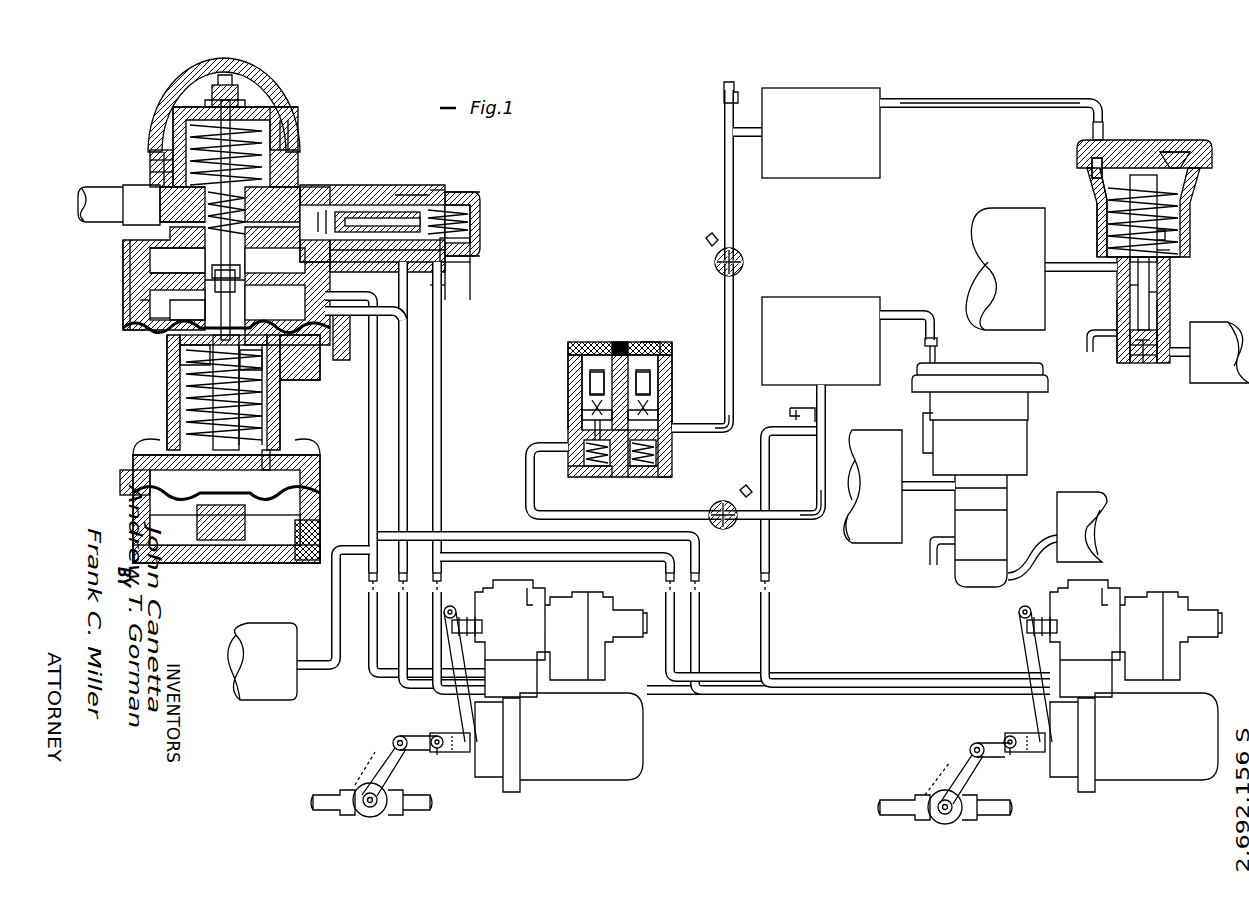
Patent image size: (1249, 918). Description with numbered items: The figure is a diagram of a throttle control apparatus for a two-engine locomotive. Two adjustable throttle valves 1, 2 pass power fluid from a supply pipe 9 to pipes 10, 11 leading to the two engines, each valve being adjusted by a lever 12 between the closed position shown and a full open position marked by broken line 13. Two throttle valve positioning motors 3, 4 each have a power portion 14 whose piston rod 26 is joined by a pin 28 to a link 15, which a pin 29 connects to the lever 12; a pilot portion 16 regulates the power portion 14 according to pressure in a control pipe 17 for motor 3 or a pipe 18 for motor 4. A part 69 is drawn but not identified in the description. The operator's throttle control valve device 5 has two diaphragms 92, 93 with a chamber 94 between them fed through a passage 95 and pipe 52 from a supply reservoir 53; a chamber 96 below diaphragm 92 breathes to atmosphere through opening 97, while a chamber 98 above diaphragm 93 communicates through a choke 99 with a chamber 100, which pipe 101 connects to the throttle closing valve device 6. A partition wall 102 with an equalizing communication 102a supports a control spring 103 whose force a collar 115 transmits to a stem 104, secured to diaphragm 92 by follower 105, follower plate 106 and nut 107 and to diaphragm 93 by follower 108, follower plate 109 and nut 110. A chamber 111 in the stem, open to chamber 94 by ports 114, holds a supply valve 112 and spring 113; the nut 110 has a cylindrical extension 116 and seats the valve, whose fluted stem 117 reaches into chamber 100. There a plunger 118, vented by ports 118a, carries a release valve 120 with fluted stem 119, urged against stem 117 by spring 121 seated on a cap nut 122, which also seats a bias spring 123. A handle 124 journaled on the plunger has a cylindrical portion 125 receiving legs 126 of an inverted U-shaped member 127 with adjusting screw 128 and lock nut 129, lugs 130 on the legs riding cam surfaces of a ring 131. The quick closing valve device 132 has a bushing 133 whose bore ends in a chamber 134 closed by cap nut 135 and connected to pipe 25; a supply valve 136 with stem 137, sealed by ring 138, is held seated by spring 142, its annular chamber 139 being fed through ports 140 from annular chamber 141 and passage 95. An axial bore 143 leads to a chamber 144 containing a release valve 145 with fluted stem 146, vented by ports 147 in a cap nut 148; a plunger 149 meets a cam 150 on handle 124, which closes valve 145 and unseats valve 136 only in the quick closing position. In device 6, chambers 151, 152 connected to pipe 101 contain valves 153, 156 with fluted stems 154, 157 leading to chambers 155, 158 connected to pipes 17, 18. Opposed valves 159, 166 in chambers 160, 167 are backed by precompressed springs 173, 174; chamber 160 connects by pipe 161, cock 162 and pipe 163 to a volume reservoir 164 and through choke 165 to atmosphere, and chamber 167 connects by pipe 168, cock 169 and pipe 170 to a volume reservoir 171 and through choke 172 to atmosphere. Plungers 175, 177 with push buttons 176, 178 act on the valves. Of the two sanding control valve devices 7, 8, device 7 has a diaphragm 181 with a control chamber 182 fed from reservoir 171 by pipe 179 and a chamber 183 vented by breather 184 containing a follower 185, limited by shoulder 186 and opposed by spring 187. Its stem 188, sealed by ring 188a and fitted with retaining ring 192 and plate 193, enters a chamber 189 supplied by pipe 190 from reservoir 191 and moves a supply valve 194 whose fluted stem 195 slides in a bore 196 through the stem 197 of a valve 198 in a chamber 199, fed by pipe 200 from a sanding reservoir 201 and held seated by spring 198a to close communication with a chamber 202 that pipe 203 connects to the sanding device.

The adjustable throttle valve 1 is at (350, 777).
The adjustable throttle valve 2 is at (922, 788).
The throttle valve positioning motor 3 is at (112, 186).
The throttle valve positioning motor 4 is at (1048, 649).
The operator's throttle control valve device 5 is at (177, 75).
The throttle closing valve device 6 is at (571, 333).
The sanding control valve device 7 is at (1076, 135).
The sanding control valve device 8 is at (905, 403).
The supply pipe 9 is at (315, 798).
The pipe 10 is at (420, 811).
The pipe 11 is at (1000, 815).
The lever 12 is at (386, 772).
The broken line 13 is at (345, 758).
The power portion 14 is at (656, 733).
The link 15 is at (433, 738).
The pilot portion 16 is at (614, 614).
The control pipe 17 is at (441, 440).
The pipe 18 is at (765, 428).
The pipe 25 is at (442, 349).
The piston rod 26 is at (453, 752).
The pin 28 is at (437, 755).
The pin 29 is at (396, 737).
The pipe 52 is at (368, 479).
The supply reservoir 53 is at (236, 630).
The lever 69 is at (462, 712).
The flexible diaphragm 92 is at (150, 493).
The flexible diaphragm 93 is at (125, 330).
The chamber 94 is at (170, 413).
The passage 95 is at (318, 358).
The chamber 96 is at (212, 548).
The breather opening 97 is at (316, 535).
The chamber 98 is at (205, 296).
The choke 99 is at (292, 286).
The chamber 100 is at (122, 262).
The pipe 101 is at (408, 388).
The partition wall 102 is at (190, 462).
The constantly open communication 102a is at (272, 460).
The control spring 103 is at (186, 396).
The stem 104 is at (214, 420).
The follower 105 is at (150, 482).
The follower plate 106 is at (140, 522).
The nut 107 is at (236, 532).
The follower 108 is at (130, 340).
The follower plate 109 is at (160, 332).
The nut 110 is at (175, 318).
The chamber 111 is at (264, 405).
The supply valve 112 is at (252, 365).
The spring 113 is at (258, 385).
The ports 114 is at (185, 372).
The collar 115 is at (178, 355).
The cylindrical extension 116 is at (140, 305).
The fluted stem 117 is at (125, 288).
The plunger 118 is at (165, 196).
The ports 118a is at (150, 165).
The fluted stem 119 is at (152, 250).
The release valve 120 is at (165, 275).
The spring 121 is at (165, 218).
The cap nut 122 is at (178, 112).
The bias spring 123 is at (172, 125).
The handle 124 is at (95, 189).
The cylindrical portion 125 is at (158, 175).
The legs 126 is at (290, 140).
The inverted U-shaped member 127 is at (292, 118).
The adjusting screw 128 is at (236, 96).
The lock nut 129 is at (246, 103).
The lug 130 is at (190, 160).
The ring 131 is at (165, 148).
The quick closing valve device 132 is at (462, 188).
The bushing 133 is at (455, 290).
The chamber 134 is at (462, 262).
The cap nut 135 is at (468, 248).
The supply valve 136 is at (472, 200).
The stem 137 is at (440, 196).
The sealing ring 138 is at (405, 192).
The annular chamber 139 is at (464, 197).
The ports 140 is at (455, 192).
The annular chamber 141 is at (442, 312).
The spring 142 is at (476, 215).
The axial bore 143 is at (470, 232).
The chamber 144 is at (375, 192).
The release valve 145 is at (385, 214).
The fluted stem 146 is at (412, 216).
The ports 147 is at (322, 246).
The cap nut 148 is at (345, 305).
The plunger 149 is at (241, 220).
The cam 150 is at (345, 200).
The chamber 151 is at (576, 368).
The chamber 152 is at (672, 350).
The valve 153 is at (588, 396).
The fluted stem 154 is at (580, 414).
The chamber 155 is at (582, 438).
The valve 156 is at (663, 372).
The fluted stem 157 is at (652, 396).
The chamber 158 is at (660, 412).
The valve 159 is at (582, 457).
The chamber 160 is at (610, 478).
The pipe 161 is at (527, 498).
The cock 162 is at (723, 527).
The pipe 163 is at (805, 520).
The volume reservoir 164 is at (852, 297).
The choke 165 is at (808, 422).
The valve 166 is at (660, 457).
The chamber 167 is at (666, 478).
The pipe 168 is at (727, 440).
The cock 169 is at (744, 264).
The pipe 170 is at (735, 227).
The volume reservoir 171 is at (845, 178).
The choke 172 is at (722, 96).
The precompressed spring 173 is at (572, 478).
The precompressed spring 174 is at (648, 478).
The plunger 175 is at (568, 350).
The operator's push button 176 is at (592, 344).
The plunger 177 is at (621, 344).
The operator's push button 178 is at (648, 344).
The pipe 179 is at (1005, 100).
The diaphragm 181 is at (1168, 152).
The control chamber 182 is at (1188, 152).
The chamber 183 is at (1100, 236).
The breather 184 is at (1096, 218).
The follower 185 is at (1092, 172).
The shoulder 186 is at (1097, 186).
The spring 187 is at (1100, 200).
The stem 188 is at (1182, 200).
The sealing ring 188a is at (1112, 257).
The chamber 189 is at (1152, 276).
The pipe 190 is at (1050, 265).
The fluid pressure supply reservoir 191 is at (1001, 203).
The retaining ring 192 is at (1166, 235).
The plate 193 is at (1170, 255).
The supply valve 194 is at (1128, 288).
The fluted stem 195 is at (1160, 292).
The bore 196 is at (1170, 305).
The stem 197 is at (1120, 308).
The valve 198 is at (1128, 372).
The spring 198a is at (1135, 372).
The chamber 199 is at (1145, 372).
The pipe 200 is at (1178, 360).
The sanding reservoir 201 is at (1195, 385).
The chamber 202 is at (1124, 352).
The pipe 203 is at (1087, 340).